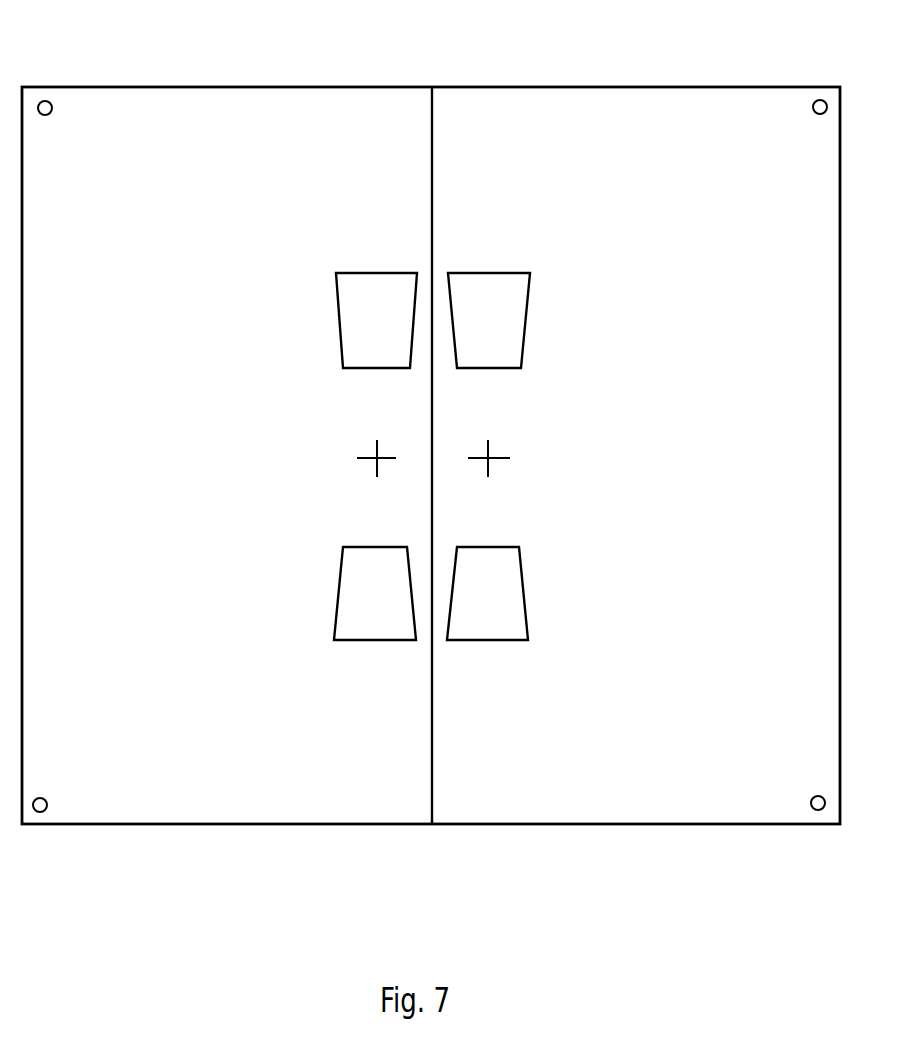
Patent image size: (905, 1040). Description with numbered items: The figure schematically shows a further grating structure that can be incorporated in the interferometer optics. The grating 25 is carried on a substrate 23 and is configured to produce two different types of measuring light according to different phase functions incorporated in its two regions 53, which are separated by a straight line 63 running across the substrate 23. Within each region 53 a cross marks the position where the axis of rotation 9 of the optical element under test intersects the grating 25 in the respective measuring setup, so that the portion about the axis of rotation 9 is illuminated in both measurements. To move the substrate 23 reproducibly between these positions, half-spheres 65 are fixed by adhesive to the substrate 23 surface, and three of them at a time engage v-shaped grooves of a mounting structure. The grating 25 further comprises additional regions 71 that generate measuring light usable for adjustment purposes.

The substrate 23 is at (725, 87).
The grating 25 is at (241, 848).
The grating regions 53 is at (646, 379).
The straight line 63 is at (434, 183).
The half-spheres 65 is at (52, 112).
The additional regions 71 is at (391, 332).
The axis of rotation 9 is at (515, 482).